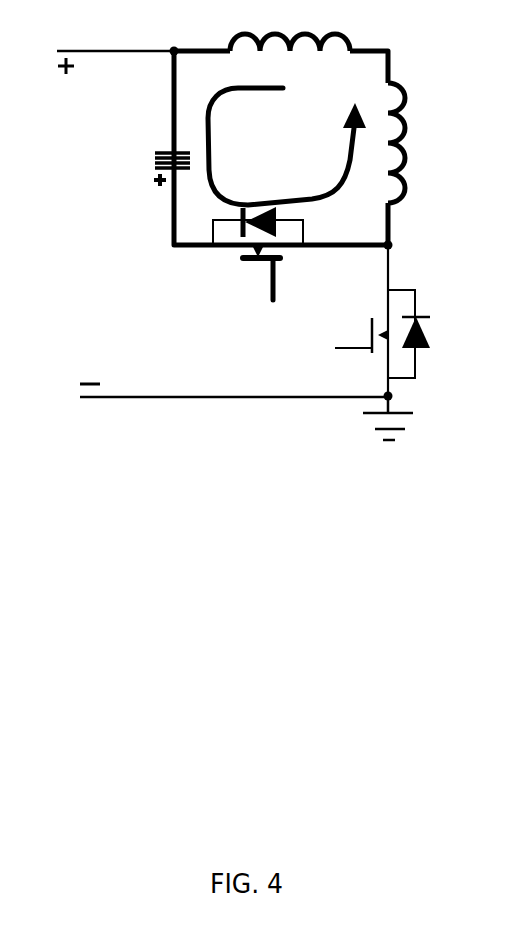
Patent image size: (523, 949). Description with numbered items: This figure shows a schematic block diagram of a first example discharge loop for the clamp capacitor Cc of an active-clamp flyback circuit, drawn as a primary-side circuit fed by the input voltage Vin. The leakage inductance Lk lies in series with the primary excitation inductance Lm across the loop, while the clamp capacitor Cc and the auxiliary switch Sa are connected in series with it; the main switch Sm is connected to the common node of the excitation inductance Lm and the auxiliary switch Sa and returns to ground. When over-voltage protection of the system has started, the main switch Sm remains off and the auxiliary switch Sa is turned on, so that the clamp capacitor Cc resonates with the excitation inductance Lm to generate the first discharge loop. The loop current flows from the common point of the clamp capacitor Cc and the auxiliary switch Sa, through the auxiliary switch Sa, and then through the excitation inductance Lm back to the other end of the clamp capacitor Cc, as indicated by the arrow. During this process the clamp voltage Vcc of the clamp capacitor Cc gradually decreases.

The input voltage source Vin is at (216, 224).
The leakage inductor Lk is at (290, 52).
The primary excitation inductance Lm is at (415, 143).
The clamp capacitor Cc is at (182, 175).
The clamp voltage Vcc is at (139, 168).
The auxiliary switch Sa is at (257, 253).
The main switch Sm is at (376, 334).